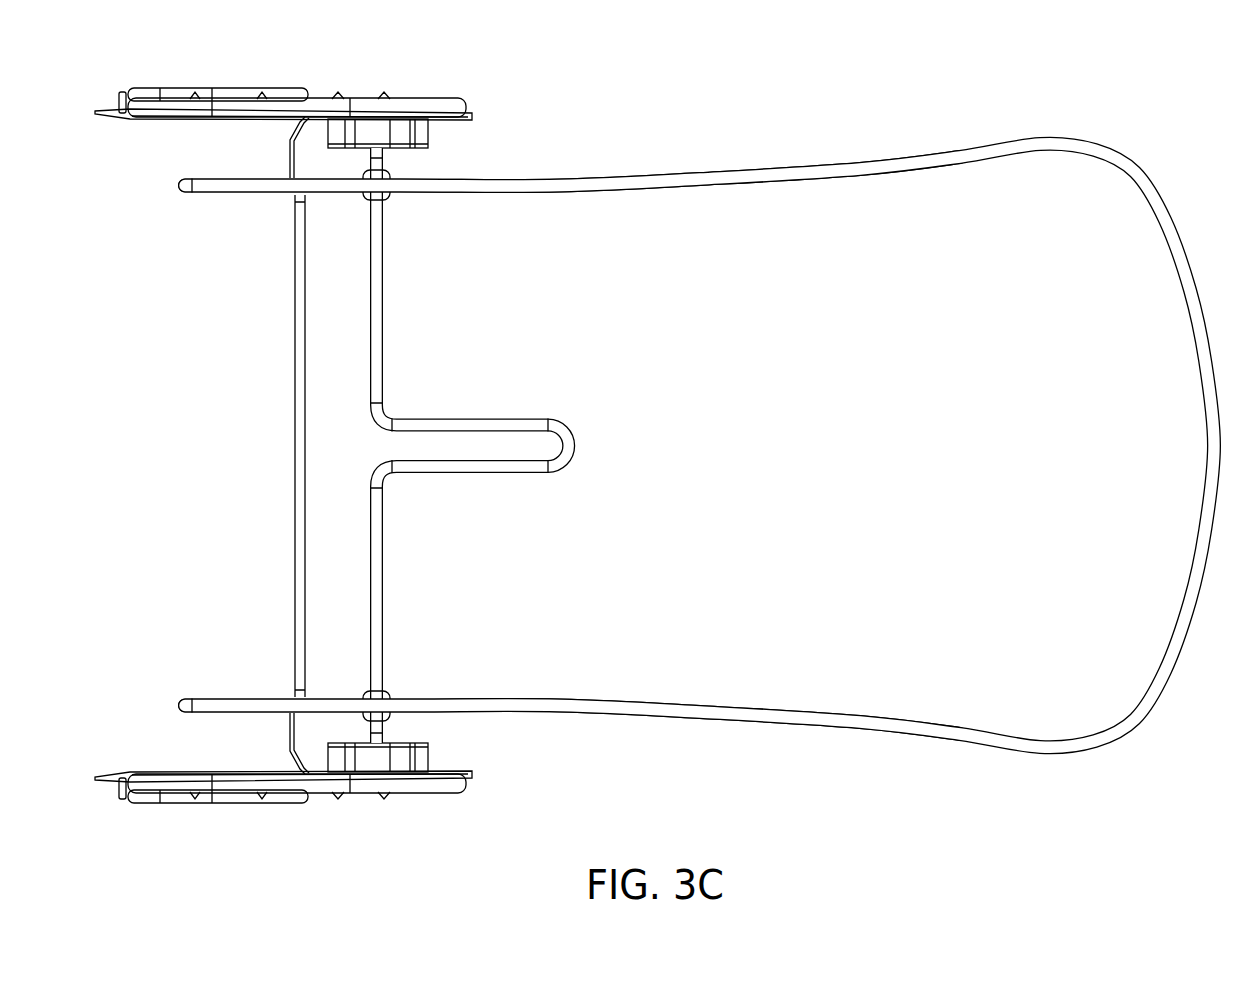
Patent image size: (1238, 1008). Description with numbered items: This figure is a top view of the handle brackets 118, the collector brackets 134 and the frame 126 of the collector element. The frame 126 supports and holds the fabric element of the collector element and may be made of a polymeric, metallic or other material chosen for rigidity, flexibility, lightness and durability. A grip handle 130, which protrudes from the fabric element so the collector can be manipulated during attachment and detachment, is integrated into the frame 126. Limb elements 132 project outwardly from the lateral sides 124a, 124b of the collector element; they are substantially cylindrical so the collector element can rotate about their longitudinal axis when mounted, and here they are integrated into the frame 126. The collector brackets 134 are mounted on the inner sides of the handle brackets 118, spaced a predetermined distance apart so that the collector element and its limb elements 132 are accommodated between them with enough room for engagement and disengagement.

The handle bracket 118 is at (185, 103).
The lateral side of the collector element 124a is at (773, 748).
The lateral side of the collector element 124b is at (657, 129).
The frame 126 is at (699, 444).
The grip handle 130 is at (516, 415).
The limb element 132 is at (466, 454).
The collector bracket 134 is at (343, 128).